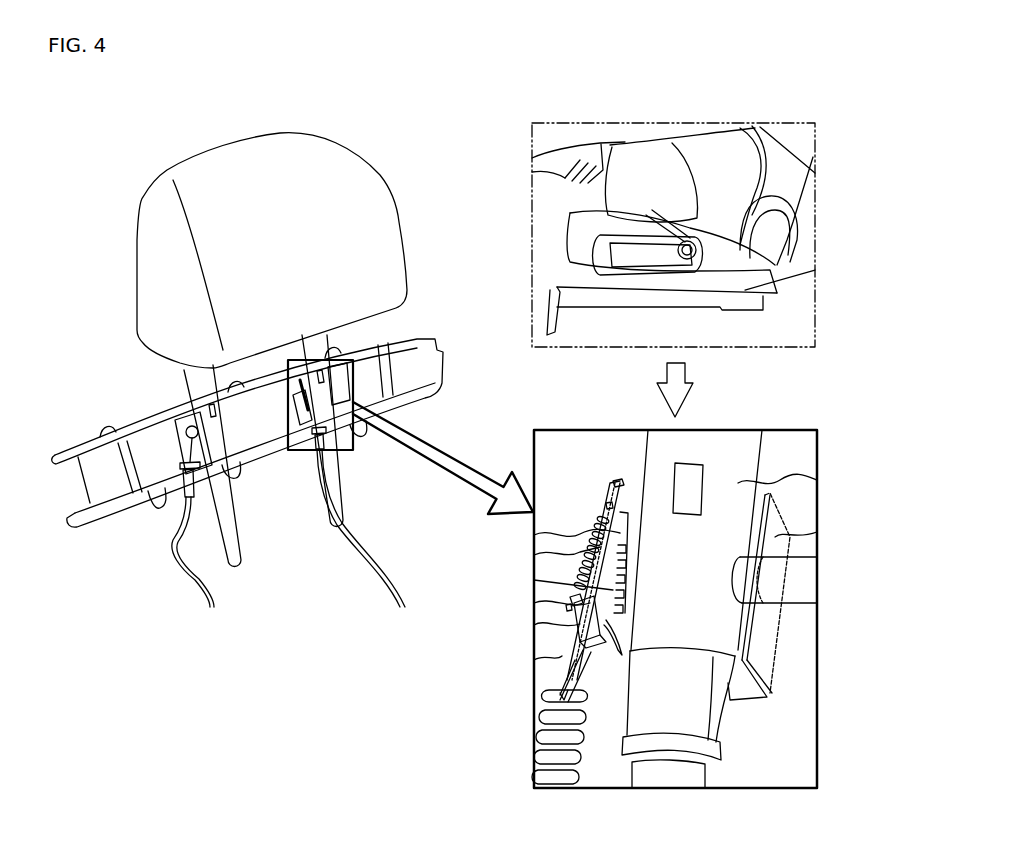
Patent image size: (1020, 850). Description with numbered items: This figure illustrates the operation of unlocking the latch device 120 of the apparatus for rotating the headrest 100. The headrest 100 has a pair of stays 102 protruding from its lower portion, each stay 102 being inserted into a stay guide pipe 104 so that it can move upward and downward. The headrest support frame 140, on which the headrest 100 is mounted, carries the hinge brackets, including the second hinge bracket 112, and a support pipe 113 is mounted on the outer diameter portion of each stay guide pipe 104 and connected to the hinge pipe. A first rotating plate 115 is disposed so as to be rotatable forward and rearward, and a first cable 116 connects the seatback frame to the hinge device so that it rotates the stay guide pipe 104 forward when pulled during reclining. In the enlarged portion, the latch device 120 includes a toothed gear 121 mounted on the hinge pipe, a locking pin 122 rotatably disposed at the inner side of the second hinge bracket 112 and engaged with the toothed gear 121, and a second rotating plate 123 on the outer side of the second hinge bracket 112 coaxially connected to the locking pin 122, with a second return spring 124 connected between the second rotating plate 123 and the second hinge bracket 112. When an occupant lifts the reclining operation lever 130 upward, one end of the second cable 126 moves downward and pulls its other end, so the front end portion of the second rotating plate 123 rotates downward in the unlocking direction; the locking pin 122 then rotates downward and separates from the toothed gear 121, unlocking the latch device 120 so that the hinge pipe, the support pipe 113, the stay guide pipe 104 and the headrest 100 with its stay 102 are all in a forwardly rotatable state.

The headrest 100 is at (374, 166).
The stay 102 is at (677, 777).
The stay guide pipe 104 is at (695, 717).
The second hinge bracket 112 is at (797, 540).
The support pipe 113 is at (778, 495).
The first rotating plate 115 is at (180, 427).
The first cable 116 is at (172, 545).
The latch device 120 is at (600, 466).
The toothed gear 121 is at (597, 520).
The locking pin 122 is at (593, 617).
The second rotating plate 123 is at (573, 600).
The second return spring 124 is at (583, 557).
The second cable 126 is at (570, 660).
The reclining operation lever 130 is at (653, 226).
The headrest support frame 140 is at (92, 462).